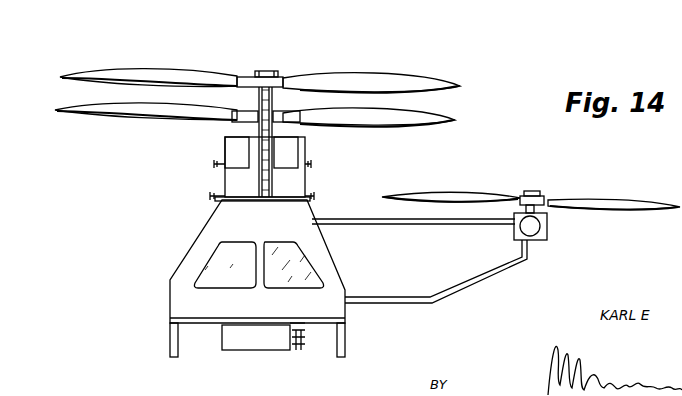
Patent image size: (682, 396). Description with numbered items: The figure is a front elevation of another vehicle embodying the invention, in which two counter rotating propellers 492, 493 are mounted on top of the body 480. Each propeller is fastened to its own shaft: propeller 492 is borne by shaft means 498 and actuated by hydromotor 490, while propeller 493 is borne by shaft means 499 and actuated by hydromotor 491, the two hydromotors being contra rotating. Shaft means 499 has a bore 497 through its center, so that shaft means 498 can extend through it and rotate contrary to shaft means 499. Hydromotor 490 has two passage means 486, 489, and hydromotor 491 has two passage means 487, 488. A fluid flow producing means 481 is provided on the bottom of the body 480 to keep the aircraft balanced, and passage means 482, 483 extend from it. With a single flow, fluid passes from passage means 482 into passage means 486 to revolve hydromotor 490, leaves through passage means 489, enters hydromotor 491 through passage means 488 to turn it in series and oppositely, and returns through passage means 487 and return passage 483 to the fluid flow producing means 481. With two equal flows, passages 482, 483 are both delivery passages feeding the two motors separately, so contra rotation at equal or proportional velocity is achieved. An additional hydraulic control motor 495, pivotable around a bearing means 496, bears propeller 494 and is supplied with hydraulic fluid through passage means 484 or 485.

The body 480 is at (178, 293).
The fluid flow producing means 481 is at (265, 345).
The passage means 482 is at (299, 350).
The passage means 483 is at (299, 328).
The passage means 484 is at (376, 224).
The passage means 485 is at (376, 303).
The passage means 486 is at (214, 196).
The passage means 487 is at (220, 164).
The passage means 488 is at (303, 162).
The passage means 489 is at (308, 196).
The hydraulic motor 490 is at (238, 200).
The hydraulic motor 491 is at (230, 146).
The propeller 492 is at (384, 78).
The propeller 493 is at (390, 122).
The propeller 494 is at (455, 196).
The hydraulic control motor 495 is at (548, 233).
The bearing means 496 is at (520, 230).
The bore 497 is at (250, 137).
The shaft means 498 is at (273, 101).
The shaft means 499 is at (276, 137).